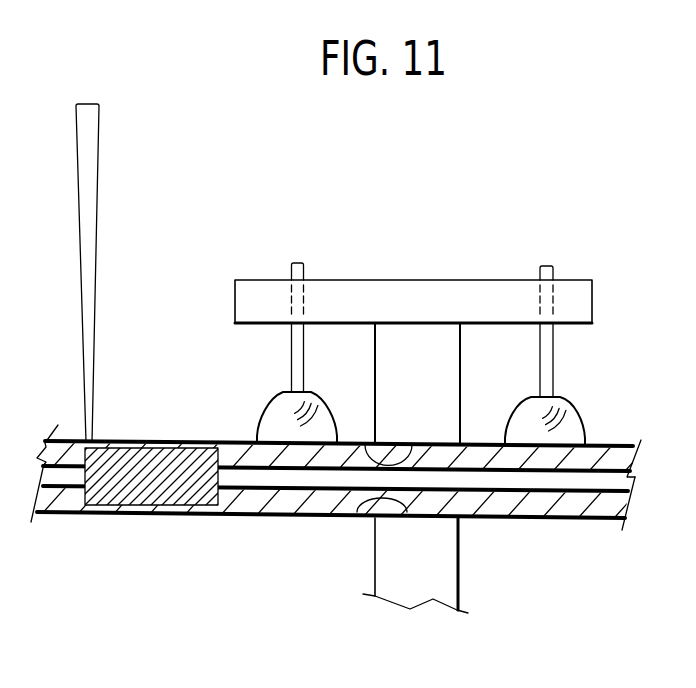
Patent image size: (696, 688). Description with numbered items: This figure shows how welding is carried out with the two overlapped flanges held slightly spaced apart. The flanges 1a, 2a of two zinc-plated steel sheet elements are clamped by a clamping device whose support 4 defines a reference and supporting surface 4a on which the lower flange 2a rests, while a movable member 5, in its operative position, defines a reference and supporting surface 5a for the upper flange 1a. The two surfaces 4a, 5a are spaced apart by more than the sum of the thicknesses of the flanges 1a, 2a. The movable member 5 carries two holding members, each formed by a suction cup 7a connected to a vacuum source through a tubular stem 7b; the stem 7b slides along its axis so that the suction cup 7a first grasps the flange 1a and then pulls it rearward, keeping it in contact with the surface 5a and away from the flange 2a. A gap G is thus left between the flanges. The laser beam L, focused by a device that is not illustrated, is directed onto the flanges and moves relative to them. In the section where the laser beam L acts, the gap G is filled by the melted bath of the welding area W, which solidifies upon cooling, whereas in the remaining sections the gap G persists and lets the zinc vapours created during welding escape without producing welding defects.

The laser beam L is at (98, 222).
The flange 1a is at (608, 458).
The flange 2a is at (625, 500).
The gap G is at (292, 478).
The welding section W is at (131, 517).
The support 4 is at (459, 580).
The reference and supporting surface 4a is at (348, 517).
The movable member 5 is at (432, 388).
The reference and supporting surface 5a is at (364, 444).
The suction cup 7a is at (258, 424).
The tubular stem 7b is at (292, 366).